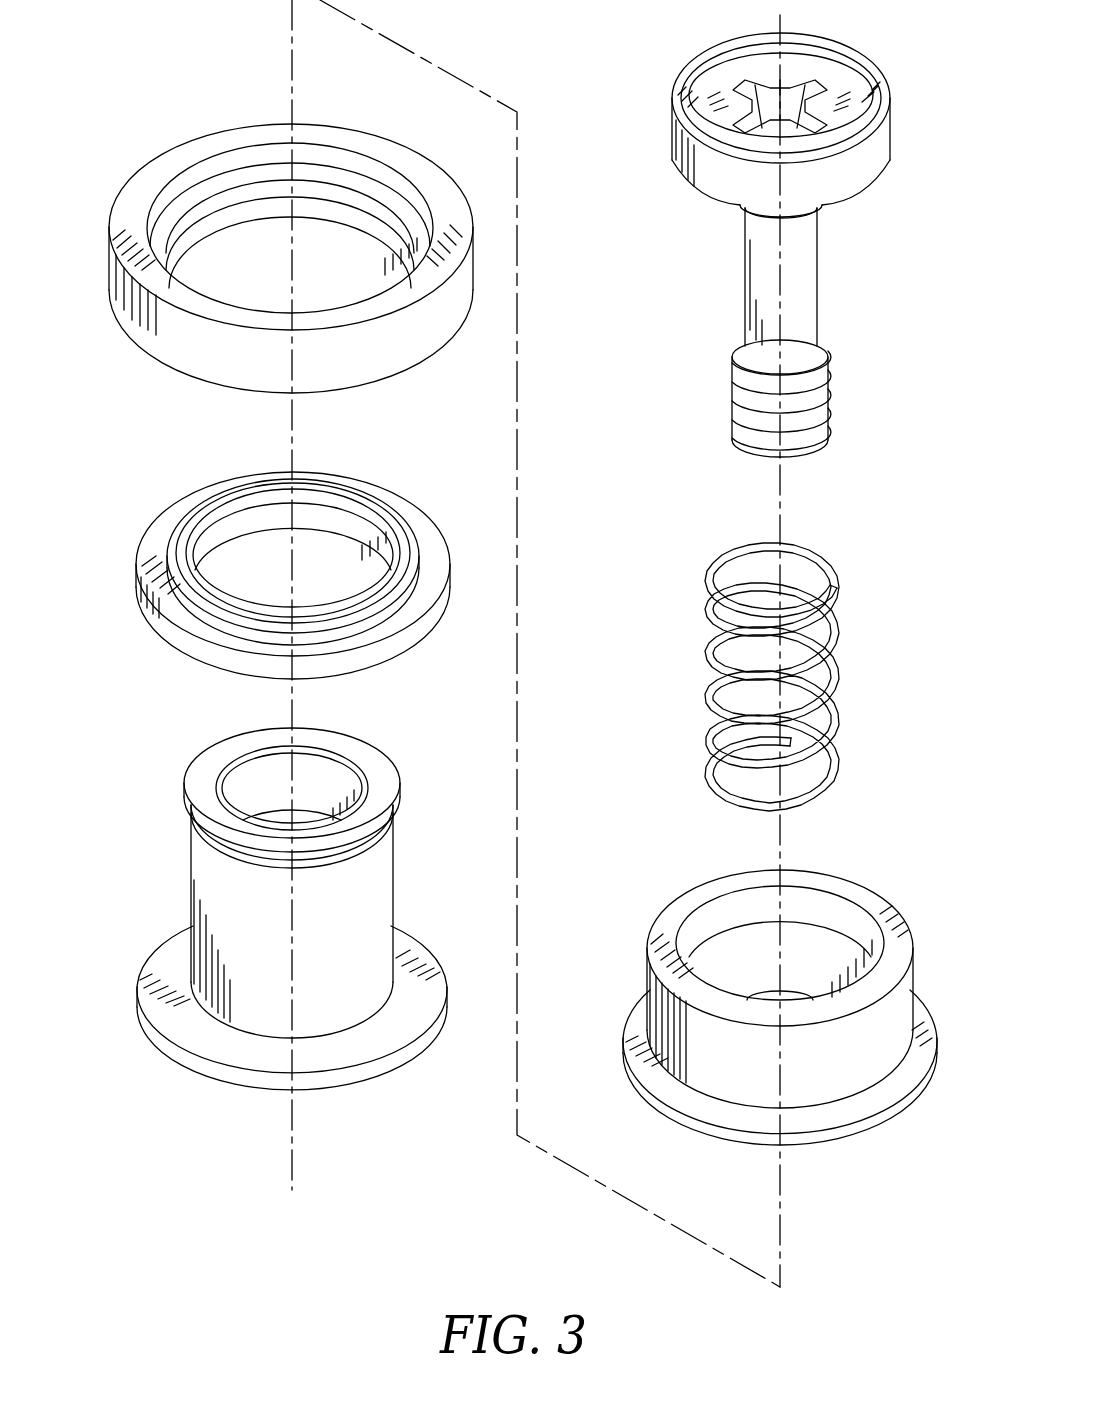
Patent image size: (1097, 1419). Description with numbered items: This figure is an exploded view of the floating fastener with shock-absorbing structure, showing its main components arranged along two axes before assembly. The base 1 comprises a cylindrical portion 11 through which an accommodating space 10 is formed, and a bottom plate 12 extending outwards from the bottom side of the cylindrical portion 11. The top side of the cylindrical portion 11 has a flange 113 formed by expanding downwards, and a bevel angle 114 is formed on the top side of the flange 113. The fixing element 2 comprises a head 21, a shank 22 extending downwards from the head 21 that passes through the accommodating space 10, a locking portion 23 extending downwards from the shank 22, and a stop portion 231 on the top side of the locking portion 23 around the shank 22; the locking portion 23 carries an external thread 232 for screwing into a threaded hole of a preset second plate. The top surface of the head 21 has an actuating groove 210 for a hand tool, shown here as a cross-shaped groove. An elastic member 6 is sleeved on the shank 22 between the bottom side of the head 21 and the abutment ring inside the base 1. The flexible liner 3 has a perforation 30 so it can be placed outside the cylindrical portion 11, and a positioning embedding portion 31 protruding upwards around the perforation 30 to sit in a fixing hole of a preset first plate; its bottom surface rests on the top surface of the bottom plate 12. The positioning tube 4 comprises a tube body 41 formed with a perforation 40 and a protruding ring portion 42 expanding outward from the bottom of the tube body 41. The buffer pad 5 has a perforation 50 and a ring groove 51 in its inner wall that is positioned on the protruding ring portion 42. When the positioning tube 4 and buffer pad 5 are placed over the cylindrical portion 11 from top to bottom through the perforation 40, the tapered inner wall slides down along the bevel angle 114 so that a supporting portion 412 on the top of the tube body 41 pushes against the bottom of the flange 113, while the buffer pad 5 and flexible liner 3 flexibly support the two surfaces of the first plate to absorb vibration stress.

The base 1 is at (150, 1135).
The accommodating space 10 is at (240, 795).
The cylindrical portion 11 is at (215, 885).
The flange 113 is at (357, 850).
The bevel angle 114 is at (190, 807).
The bottom plate 12 is at (192, 1033).
The fixing element 2 is at (626, 32).
The head 21 is at (702, 63).
The actuating groove 210 is at (803, 100).
The shank 22 is at (752, 262).
The locking portion 23 is at (656, 305).
The stop portion 231 is at (742, 353).
The external thread 232 is at (740, 418).
The flexible liner 3 is at (152, 545).
The perforation 30 is at (243, 562).
The positioning embedding portion 31 is at (387, 605).
The positioning tube 4 is at (888, 810).
The perforation 40 is at (798, 963).
The tube body 41 is at (657, 1022).
The supporting portion 412 is at (683, 908).
The protruding ring portion 42 is at (628, 1047).
The buffer pad 5 is at (415, 340).
The perforation 50 is at (262, 252).
The ring groove 51 is at (355, 185).
The elastic member 6 is at (708, 620).